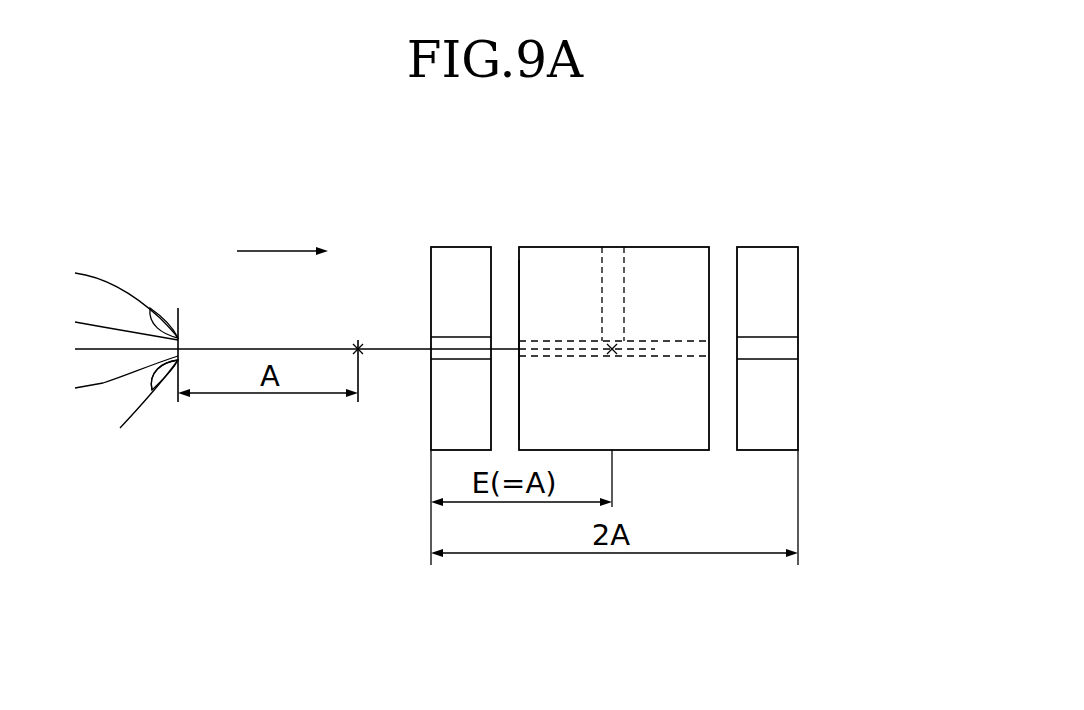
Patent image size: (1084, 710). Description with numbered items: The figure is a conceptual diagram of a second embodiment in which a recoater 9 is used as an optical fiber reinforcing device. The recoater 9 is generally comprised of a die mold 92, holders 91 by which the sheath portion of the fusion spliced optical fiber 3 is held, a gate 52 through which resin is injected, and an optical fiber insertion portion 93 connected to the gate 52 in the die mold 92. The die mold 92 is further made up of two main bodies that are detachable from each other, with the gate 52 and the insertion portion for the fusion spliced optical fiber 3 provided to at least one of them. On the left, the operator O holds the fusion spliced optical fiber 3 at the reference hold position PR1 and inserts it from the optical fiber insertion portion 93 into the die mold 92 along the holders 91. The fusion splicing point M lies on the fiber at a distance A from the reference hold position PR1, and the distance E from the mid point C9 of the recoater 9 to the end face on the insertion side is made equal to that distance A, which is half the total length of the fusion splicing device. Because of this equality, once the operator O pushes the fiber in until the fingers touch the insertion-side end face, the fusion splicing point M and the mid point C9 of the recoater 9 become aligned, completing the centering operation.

The recoater 9 is at (746, 212).
The holder 91 is at (461, 258).
The die mold 92 is at (560, 260).
The optical fiber insertion portion 93 is at (511, 333).
The gate 52 is at (612, 260).
The mid point C9 is at (616, 353).
The operator O is at (108, 274).
The fusion spliced optical fiber 3 is at (268, 348).
The fusion splicing point M is at (360, 345).
The reference hold position PR1 is at (168, 406).